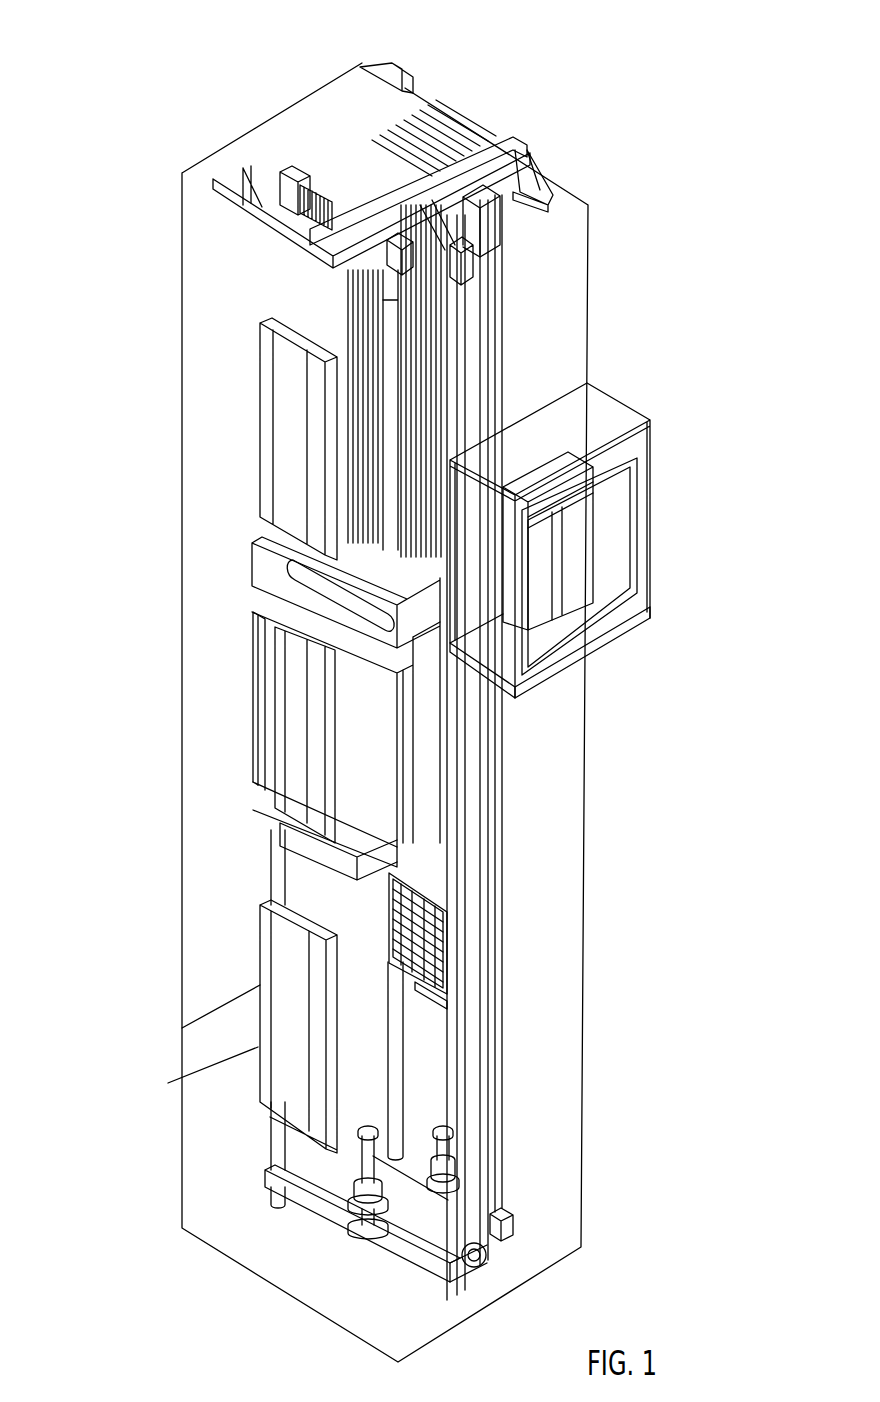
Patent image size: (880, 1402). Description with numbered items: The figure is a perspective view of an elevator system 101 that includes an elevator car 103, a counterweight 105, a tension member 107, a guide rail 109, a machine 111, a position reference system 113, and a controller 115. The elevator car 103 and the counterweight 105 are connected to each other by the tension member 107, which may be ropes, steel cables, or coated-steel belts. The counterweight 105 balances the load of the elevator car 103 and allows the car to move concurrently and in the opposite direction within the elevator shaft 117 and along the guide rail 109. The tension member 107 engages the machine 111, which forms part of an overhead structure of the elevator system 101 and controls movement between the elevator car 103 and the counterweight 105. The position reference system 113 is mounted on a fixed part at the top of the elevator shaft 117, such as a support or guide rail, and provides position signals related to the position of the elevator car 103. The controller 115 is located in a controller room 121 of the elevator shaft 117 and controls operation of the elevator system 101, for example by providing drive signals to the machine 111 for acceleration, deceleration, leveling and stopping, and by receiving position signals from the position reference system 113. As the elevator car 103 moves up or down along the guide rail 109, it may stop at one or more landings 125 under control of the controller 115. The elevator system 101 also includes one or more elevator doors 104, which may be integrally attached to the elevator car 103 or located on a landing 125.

The elevator system 101 is at (607, 92).
The elevator car 103 is at (385, 755).
The elevator door 104 is at (290, 741).
The counterweight 105 is at (445, 951).
The tension member 107 is at (385, 427).
The guide rail 109 is at (470, 874).
The machine 111 is at (293, 167).
The position reference system 113 is at (473, 264).
The controller 115 is at (587, 555).
The elevator shaft 117 is at (239, 877).
The controller room 121 is at (657, 418).
The landing 125 is at (258, 424).